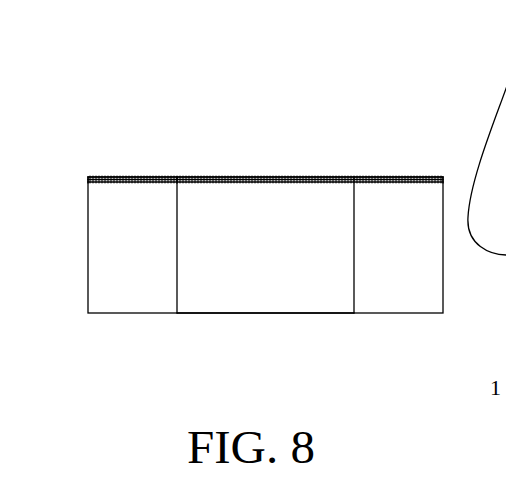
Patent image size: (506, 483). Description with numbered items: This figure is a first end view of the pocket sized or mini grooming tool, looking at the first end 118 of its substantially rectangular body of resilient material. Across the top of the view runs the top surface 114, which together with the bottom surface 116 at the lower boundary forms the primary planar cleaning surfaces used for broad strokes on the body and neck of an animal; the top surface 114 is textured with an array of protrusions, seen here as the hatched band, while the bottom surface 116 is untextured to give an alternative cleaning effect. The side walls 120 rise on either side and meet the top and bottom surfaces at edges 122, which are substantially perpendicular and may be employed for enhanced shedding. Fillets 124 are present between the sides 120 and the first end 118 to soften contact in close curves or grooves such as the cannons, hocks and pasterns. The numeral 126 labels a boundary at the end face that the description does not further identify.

The top surface 114 is at (233, 186).
The bottom surface 116 is at (322, 313).
The first end 118 is at (262, 248).
The side walls 120 is at (88, 250).
The edges 122 is at (86, 177).
The fillets 124 is at (124, 263).
The divider 126 is at (176, 178).